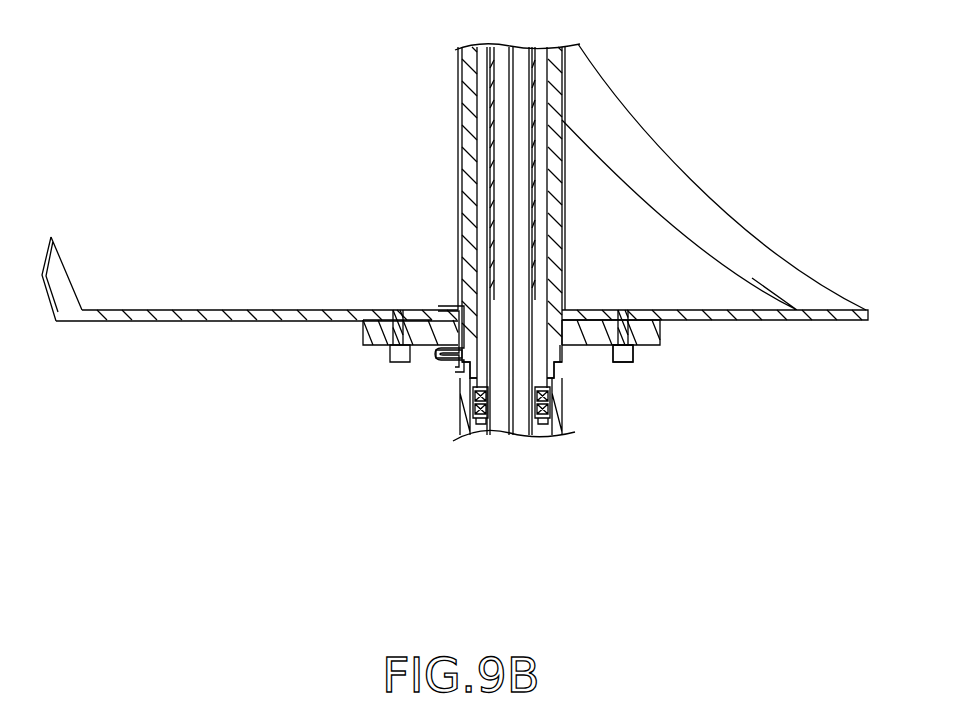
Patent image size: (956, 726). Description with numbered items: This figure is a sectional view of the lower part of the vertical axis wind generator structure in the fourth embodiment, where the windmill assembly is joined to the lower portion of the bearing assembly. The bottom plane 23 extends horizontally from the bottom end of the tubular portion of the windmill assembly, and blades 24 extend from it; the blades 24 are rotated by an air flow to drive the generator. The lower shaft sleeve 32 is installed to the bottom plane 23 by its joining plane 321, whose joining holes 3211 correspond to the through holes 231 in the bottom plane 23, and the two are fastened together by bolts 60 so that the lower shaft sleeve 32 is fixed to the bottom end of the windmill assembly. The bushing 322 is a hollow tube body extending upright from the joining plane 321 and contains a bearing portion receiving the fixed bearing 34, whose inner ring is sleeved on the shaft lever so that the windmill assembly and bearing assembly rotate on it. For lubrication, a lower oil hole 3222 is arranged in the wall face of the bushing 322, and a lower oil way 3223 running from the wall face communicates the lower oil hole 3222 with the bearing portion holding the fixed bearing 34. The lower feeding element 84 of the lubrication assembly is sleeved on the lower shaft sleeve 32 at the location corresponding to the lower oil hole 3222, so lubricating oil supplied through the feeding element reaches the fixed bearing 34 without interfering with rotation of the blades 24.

The blade 24 is at (58, 292).
The bottom plane 23 is at (733, 317).
The through hole 231 is at (634, 318).
The lower shaft sleeve 32 is at (675, 335).
The joining plane 321 is at (587, 335).
The joining hole 3211 is at (628, 335).
The lower oil hole 3222 is at (397, 310).
The lower oil way 3223 is at (463, 375).
The lower feeding element 84 is at (450, 369).
The fixed bearing 34 is at (477, 405).
The bolt 60 is at (628, 355).
The bushing 322 is at (467, 422).